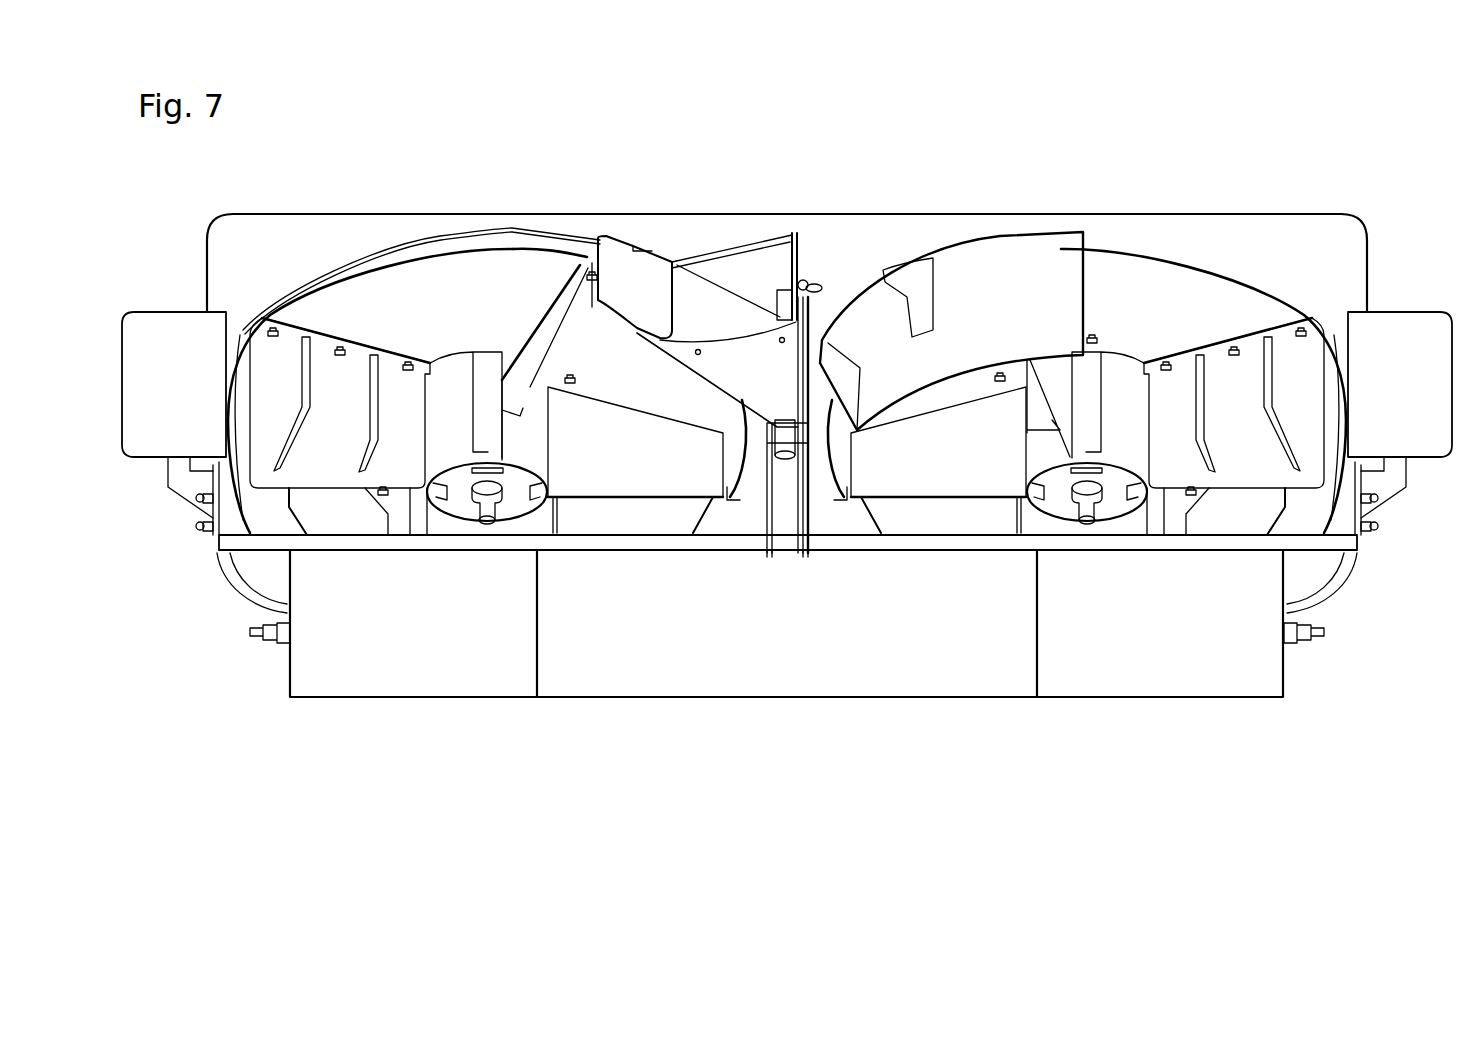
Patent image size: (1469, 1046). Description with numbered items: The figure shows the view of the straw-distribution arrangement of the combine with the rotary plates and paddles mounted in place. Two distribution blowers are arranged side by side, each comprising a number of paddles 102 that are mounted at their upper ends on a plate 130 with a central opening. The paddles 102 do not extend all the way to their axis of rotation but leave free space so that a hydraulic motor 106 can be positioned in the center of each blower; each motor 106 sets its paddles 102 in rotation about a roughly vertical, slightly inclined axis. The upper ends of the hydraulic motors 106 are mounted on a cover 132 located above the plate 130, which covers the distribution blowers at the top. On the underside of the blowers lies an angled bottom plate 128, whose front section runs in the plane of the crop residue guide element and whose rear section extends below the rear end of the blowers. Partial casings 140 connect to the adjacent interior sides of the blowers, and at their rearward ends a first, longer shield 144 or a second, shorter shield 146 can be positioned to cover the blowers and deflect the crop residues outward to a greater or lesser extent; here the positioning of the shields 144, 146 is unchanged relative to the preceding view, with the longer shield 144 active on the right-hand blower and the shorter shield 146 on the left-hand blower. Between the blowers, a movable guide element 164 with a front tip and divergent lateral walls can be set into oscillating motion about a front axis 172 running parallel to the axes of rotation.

The paddles 102 is at (330, 440).
The hydraulic motor 106 is at (492, 478).
The bottom plate 128 is at (908, 660).
The plate 130 is at (423, 298).
The cover 132 is at (1158, 214).
The partial casings 140 is at (660, 337).
The first shield 144 is at (1037, 272).
The second shield 146 is at (650, 273).
The movable guide element 164 is at (808, 263).
The front axis 172 is at (785, 459).